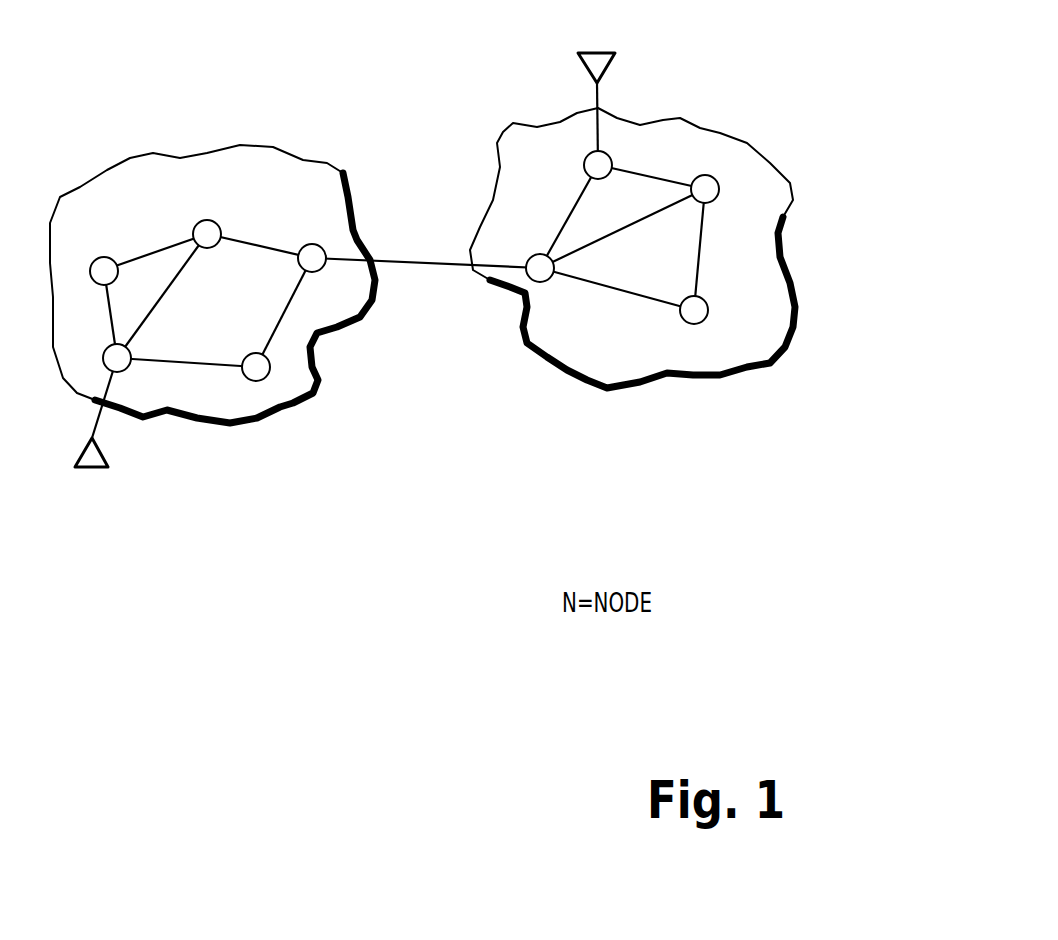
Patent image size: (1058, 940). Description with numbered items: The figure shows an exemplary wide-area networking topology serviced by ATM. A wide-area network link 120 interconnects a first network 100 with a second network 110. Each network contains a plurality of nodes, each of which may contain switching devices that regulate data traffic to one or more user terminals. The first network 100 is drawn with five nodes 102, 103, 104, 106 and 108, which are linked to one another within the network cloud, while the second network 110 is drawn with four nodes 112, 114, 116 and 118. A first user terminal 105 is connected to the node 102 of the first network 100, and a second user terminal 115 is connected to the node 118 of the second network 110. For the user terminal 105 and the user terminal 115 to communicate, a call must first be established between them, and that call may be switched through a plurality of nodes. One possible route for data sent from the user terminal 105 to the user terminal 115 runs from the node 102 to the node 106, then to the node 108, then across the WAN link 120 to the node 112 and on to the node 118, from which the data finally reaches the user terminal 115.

The first network 100 is at (237, 425).
The node 102 is at (135, 351).
The node 103 is at (112, 258).
The node 104 is at (225, 224).
The first user terminal 105 is at (130, 462).
The node 106 is at (274, 366).
The node 108 is at (294, 264).
The second network 110 is at (755, 370).
The node 112 is at (549, 284).
The node 114 is at (690, 325).
The second user terminal 115 is at (656, 82).
The node 116 is at (723, 199).
The node 118 is at (578, 164).
The wide-area network (WAN) link 120 is at (446, 263).